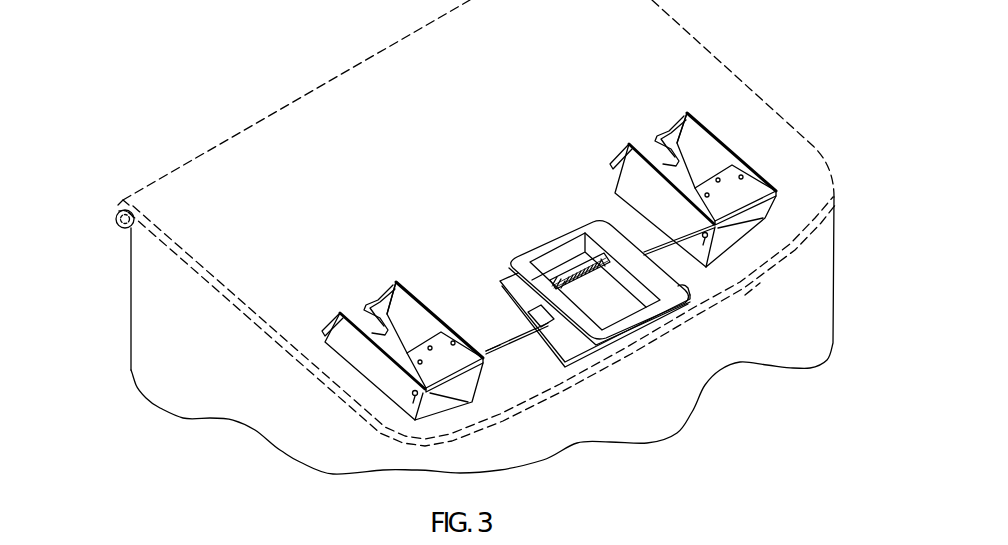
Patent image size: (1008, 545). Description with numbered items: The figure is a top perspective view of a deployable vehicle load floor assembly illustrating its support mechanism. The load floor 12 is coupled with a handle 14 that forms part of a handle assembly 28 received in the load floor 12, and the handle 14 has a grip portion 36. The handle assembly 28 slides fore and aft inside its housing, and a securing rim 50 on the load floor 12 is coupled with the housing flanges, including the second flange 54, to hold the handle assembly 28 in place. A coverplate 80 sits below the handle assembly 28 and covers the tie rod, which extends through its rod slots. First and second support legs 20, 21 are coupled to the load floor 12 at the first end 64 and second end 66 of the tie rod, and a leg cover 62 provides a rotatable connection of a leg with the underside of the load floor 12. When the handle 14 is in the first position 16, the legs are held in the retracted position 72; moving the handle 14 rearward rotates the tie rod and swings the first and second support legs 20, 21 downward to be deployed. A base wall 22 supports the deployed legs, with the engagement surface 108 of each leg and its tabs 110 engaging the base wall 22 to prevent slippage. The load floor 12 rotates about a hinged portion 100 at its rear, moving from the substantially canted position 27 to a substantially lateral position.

The load floor 12 is at (685, 50).
The handle 14 is at (626, 270).
The first position 16 is at (484, 213).
The first support leg 20 is at (372, 363).
The second support leg 21 is at (715, 135).
The base wall 22 is at (614, 421).
The substantially canted position 27 is at (748, 53).
The handle assembly 28 is at (617, 311).
The grip portion 36 is at (570, 275).
The securing rim 50 is at (652, 316).
The second flange 54 is at (680, 288).
The leg cover 62 is at (452, 392).
The first end 64 is at (497, 343).
The second end 66 is at (752, 262).
The retracted position 72 is at (339, 432).
The coverplate 80 is at (548, 357).
The hinged portion 100 is at (124, 229).
The engagement surface 108 is at (396, 282).
The tabs 110 is at (322, 330).